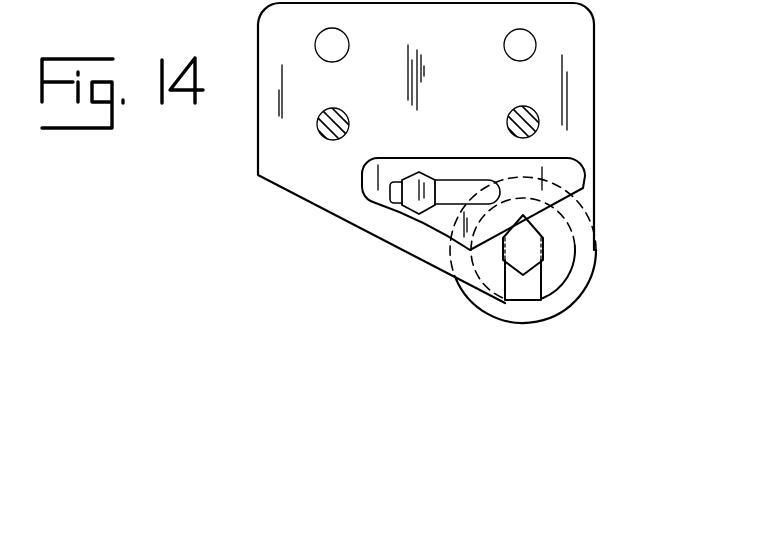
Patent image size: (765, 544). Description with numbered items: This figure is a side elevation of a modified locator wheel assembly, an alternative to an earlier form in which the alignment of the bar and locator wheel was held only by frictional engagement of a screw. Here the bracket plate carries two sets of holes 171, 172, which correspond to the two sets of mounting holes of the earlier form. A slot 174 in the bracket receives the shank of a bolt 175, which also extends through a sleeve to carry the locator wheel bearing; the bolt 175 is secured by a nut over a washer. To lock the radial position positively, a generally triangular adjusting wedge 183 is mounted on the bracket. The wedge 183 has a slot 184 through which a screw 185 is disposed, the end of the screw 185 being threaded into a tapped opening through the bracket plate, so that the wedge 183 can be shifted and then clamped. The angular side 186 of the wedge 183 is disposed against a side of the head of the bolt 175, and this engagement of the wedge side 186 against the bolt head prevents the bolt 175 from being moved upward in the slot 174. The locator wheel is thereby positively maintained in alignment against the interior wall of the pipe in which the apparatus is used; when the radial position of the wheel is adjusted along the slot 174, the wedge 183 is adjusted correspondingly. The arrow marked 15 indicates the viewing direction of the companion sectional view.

The holes 171 is at (318, 131).
The holes 172 is at (537, 113).
The adjusting wedge 183 is at (410, 218).
The slot 184 is at (452, 180).
The screw 185 is at (400, 213).
The angular side 186 is at (547, 233).
The slot 174 is at (507, 284).
The bolt 175 is at (507, 305).
The section line 15 is at (524, 337).